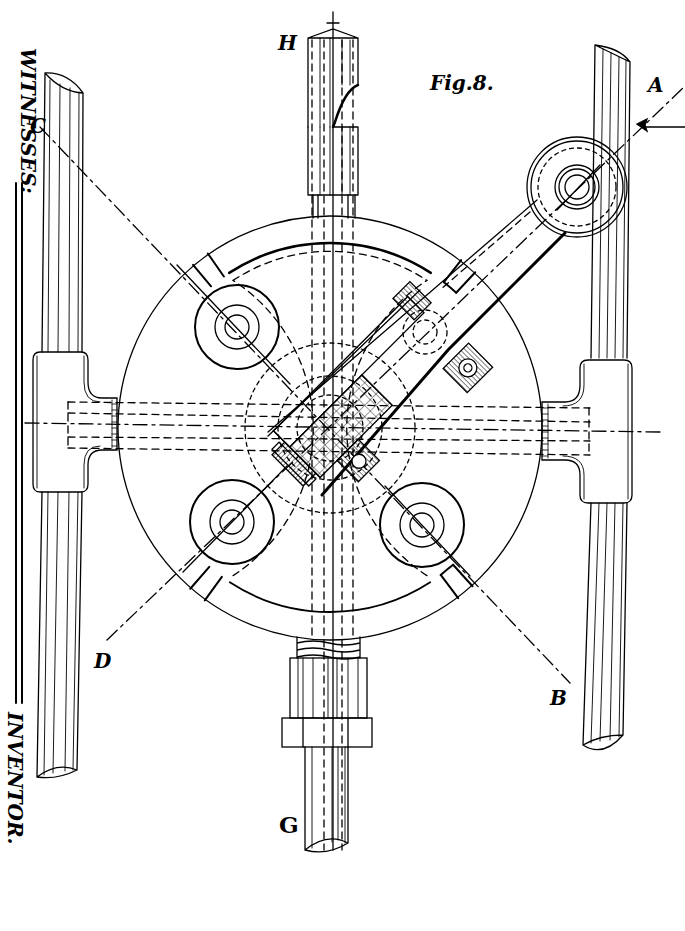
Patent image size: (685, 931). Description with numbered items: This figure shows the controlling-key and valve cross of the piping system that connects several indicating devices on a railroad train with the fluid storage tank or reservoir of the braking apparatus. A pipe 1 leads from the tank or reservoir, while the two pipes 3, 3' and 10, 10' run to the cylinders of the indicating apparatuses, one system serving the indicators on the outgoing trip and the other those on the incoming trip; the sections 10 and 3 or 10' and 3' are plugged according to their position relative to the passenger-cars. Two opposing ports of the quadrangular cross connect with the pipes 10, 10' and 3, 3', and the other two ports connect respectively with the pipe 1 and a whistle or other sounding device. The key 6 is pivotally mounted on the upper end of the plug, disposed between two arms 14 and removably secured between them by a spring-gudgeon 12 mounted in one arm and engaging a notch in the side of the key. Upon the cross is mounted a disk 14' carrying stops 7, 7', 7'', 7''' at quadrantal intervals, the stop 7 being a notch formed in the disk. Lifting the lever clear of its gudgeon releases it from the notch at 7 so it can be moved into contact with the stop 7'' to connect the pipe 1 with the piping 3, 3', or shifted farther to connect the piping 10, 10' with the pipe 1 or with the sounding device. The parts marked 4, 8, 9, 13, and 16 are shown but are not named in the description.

The pipe 1 is at (340, 811).
The pipe 3 is at (80, 212).
The pipe section 3' is at (74, 635).
The coupling 4 is at (642, 388).
The key 6 is at (526, 262).
The stop 7 is at (451, 276).
The stop 7' is at (448, 585).
The stop 7'' is at (213, 267).
The stop 7''' is at (212, 583).
The upper tube lower section 8 is at (334, 177).
The upper tube 9 is at (340, 73).
The pipe 10 is at (627, 201).
The pipe section 10' is at (624, 626).
The spring-gudgeon 12 is at (462, 342).
The ring 13 is at (296, 441).
The arms 14 is at (375, 390).
The disk 14' is at (330, 428).
The nut 16 is at (362, 711).